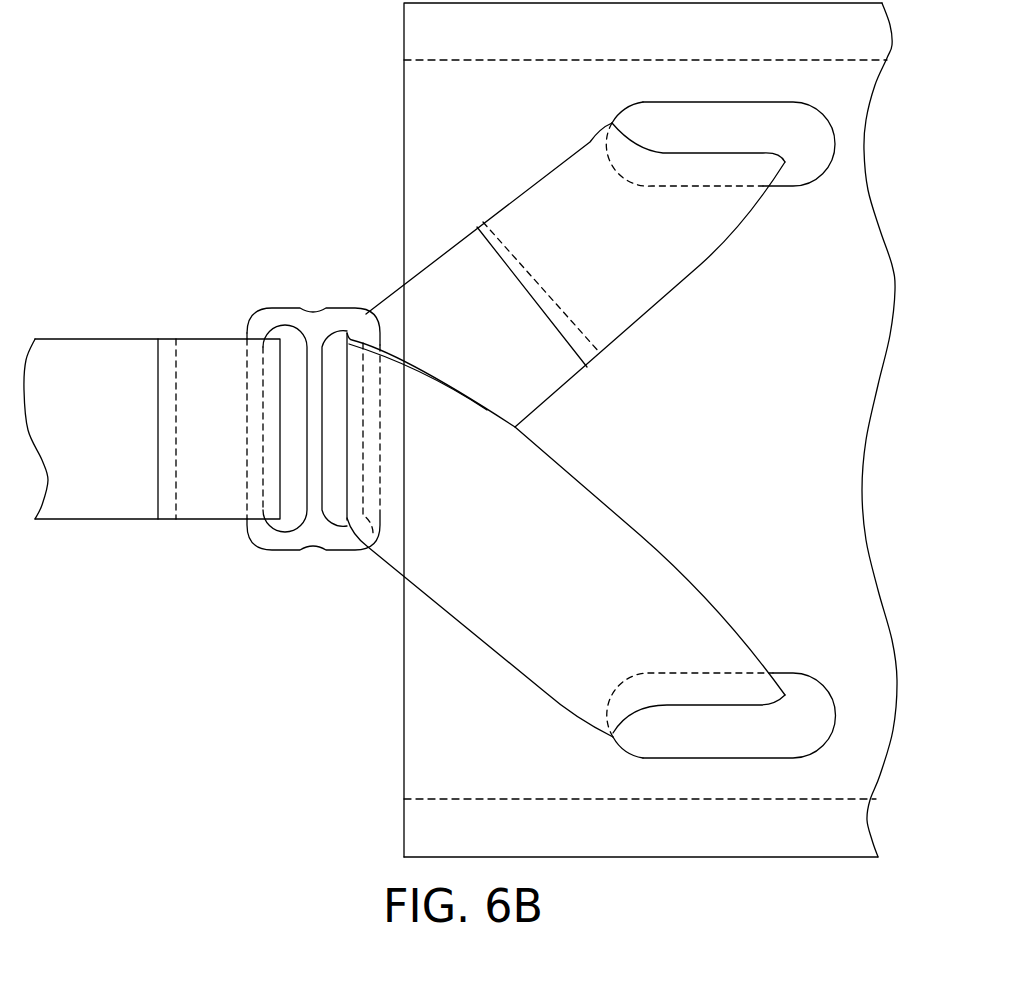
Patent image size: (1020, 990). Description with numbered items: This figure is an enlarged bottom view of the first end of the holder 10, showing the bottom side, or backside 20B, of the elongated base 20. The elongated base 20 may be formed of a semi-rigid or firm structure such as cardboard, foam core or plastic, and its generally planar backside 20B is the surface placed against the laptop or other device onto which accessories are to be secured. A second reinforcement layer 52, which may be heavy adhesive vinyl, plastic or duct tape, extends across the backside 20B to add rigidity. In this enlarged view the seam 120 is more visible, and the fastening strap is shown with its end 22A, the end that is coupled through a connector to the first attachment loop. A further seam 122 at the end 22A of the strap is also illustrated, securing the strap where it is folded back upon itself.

The holder 10 is at (308, 78).
The elongated base 20 is at (425, 33).
The backside 20B is at (514, 746).
The second reinforcement layer 52 is at (420, 774).
The first end of the fastening strap 22A is at (102, 495).
The seam 120 is at (483, 235).
The seam 122 is at (168, 353).